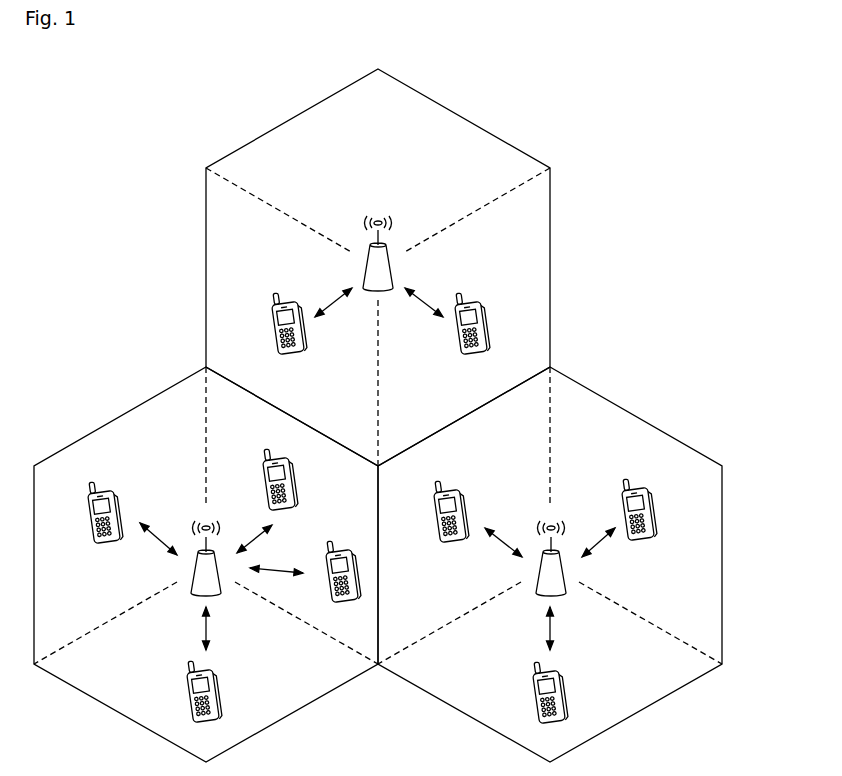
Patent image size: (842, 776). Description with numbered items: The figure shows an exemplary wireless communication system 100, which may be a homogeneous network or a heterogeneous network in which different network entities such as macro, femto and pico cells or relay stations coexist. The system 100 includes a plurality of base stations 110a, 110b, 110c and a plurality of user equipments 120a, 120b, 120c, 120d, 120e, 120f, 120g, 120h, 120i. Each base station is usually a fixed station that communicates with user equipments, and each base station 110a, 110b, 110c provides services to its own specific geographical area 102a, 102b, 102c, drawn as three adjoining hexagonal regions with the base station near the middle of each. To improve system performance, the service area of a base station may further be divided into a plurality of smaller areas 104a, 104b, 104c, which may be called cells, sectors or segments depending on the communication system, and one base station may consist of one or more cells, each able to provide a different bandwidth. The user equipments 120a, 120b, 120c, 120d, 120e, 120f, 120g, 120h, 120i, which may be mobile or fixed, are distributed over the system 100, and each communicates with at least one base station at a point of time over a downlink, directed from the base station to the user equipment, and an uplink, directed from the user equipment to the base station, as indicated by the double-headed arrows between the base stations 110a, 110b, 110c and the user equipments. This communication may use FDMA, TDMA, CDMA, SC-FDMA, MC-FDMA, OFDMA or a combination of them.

The wireless communication system 100 is at (612, 112).
The specific geographical area 102a is at (465, 118).
The specific geographical area 102b is at (120, 415).
The specific geographical area 102c is at (637, 413).
The smaller area 104a is at (397, 130).
The smaller area 104b is at (367, 403).
The smaller area 104c is at (452, 403).
The base station 110a is at (377, 215).
The base station 110b is at (222, 582).
The base station 110c is at (566, 583).
The user equipment 120a is at (272, 316).
The user equipment 120b is at (489, 320).
The user equipment 120c is at (110, 492).
The user equipment 120d is at (263, 466).
The user equipment 120e is at (335, 553).
The user equipment 120f is at (187, 690).
The user equipment 120g is at (455, 492).
The user equipment 120h is at (535, 690).
The user equipment 120i is at (655, 540).